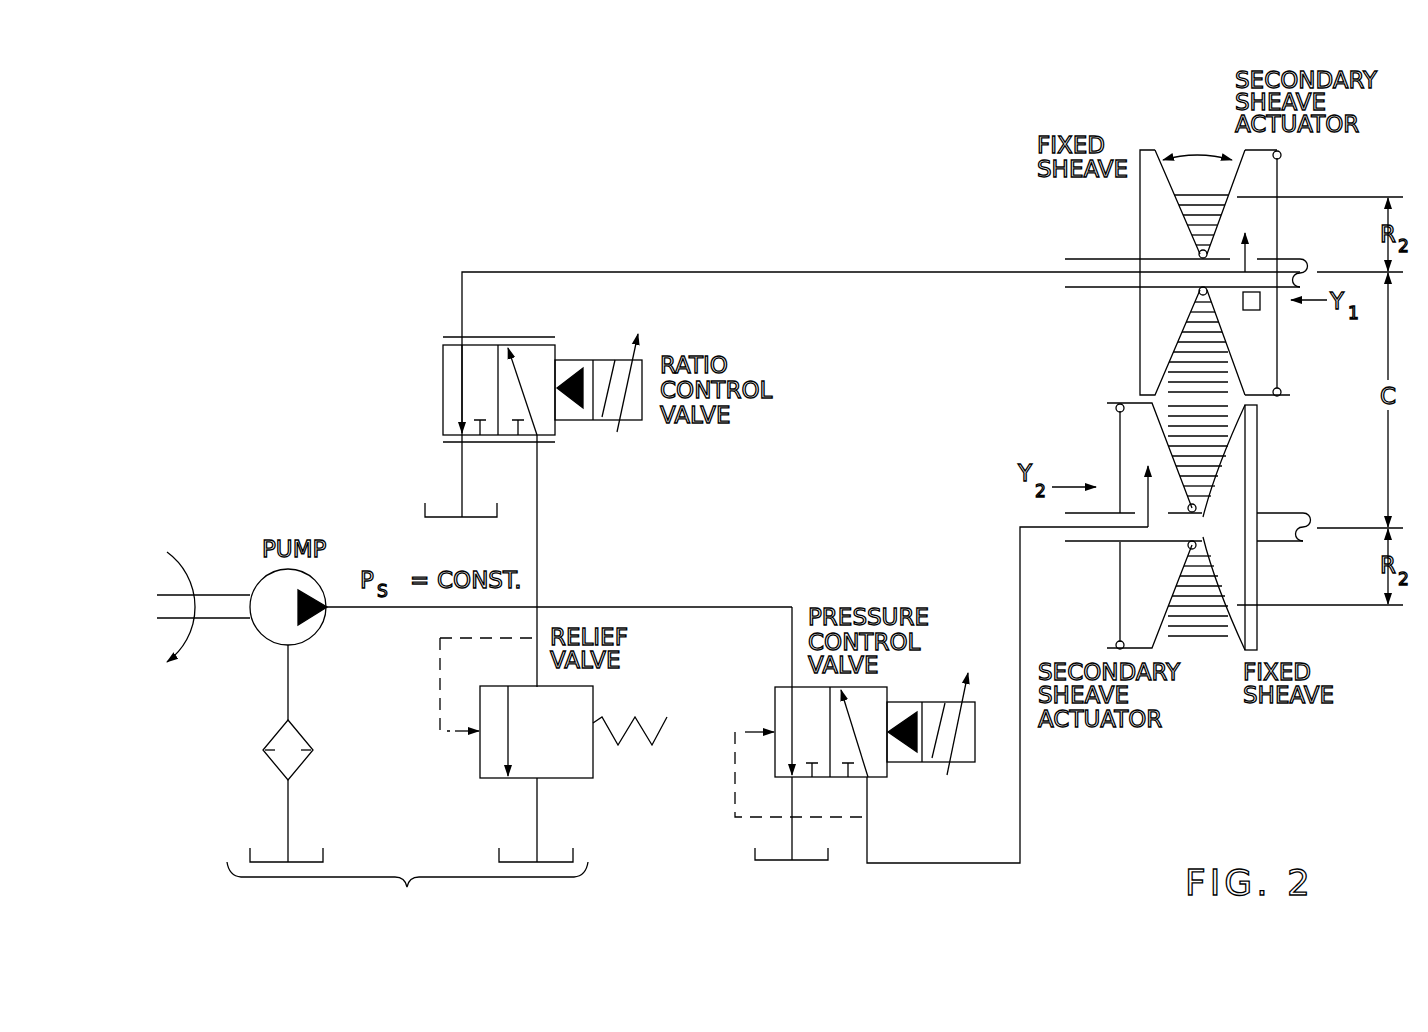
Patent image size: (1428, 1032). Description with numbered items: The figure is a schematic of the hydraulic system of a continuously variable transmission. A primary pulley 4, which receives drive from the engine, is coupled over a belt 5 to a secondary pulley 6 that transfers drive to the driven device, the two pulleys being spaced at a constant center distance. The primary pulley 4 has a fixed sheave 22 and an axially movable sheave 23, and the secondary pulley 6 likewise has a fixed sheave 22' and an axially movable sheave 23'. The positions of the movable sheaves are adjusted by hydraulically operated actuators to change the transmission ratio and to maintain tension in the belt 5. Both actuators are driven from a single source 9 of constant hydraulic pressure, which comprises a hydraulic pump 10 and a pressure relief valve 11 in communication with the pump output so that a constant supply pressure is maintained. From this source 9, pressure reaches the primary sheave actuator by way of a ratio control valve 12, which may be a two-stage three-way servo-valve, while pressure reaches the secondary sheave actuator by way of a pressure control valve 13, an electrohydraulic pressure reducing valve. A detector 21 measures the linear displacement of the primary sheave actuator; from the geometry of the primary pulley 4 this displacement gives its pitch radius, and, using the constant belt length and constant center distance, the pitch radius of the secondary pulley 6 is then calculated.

The primary pulley 4 is at (1178, 121).
The belt 5 is at (1210, 195).
The secondary pulley 6 is at (1202, 676).
The source of constant hydraulic pressure 9 is at (407, 783).
The hydraulic pump 10 is at (252, 582).
The pressure relief valve 11 is at (593, 766).
The ratio control valve 12 is at (642, 360).
The pressure control valve 13 is at (905, 762).
The detector 21 is at (1252, 312).
The fixed sheave 22 is at (1141, 272).
The fixed sheave 22' is at (1268, 527).
The axially movable sheave 23 is at (1291, 271).
The axially movable sheave 23' is at (1115, 526).